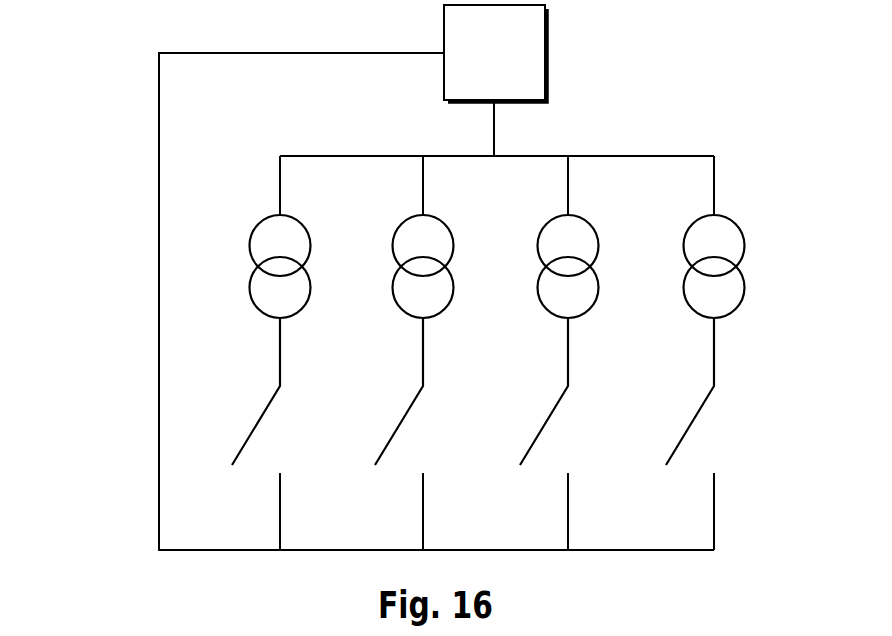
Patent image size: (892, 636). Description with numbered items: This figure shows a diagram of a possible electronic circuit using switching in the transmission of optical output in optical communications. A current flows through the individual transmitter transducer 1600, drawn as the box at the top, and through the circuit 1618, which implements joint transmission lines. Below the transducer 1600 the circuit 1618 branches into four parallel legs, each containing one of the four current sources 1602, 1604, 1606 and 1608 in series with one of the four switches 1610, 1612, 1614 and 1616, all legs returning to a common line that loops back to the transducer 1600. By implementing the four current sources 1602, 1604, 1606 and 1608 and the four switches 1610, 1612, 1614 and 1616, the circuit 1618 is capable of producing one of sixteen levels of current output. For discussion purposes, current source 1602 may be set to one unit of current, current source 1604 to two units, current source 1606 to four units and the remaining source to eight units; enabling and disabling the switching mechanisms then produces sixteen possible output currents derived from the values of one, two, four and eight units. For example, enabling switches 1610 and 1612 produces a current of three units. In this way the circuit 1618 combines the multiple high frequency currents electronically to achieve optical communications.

The transmitter transducer 1600 is at (525, 67).
The current source 1602 is at (315, 237).
The current source 1604 is at (459, 237).
The current source 1606 is at (604, 237).
The current source 1608 is at (749, 237).
The switch 1610 is at (158, 313).
The switch 1612 is at (287, 434).
The switch 1614 is at (431, 434).
The switch 1616 is at (576, 434).
The circuit 1618 is at (721, 434).